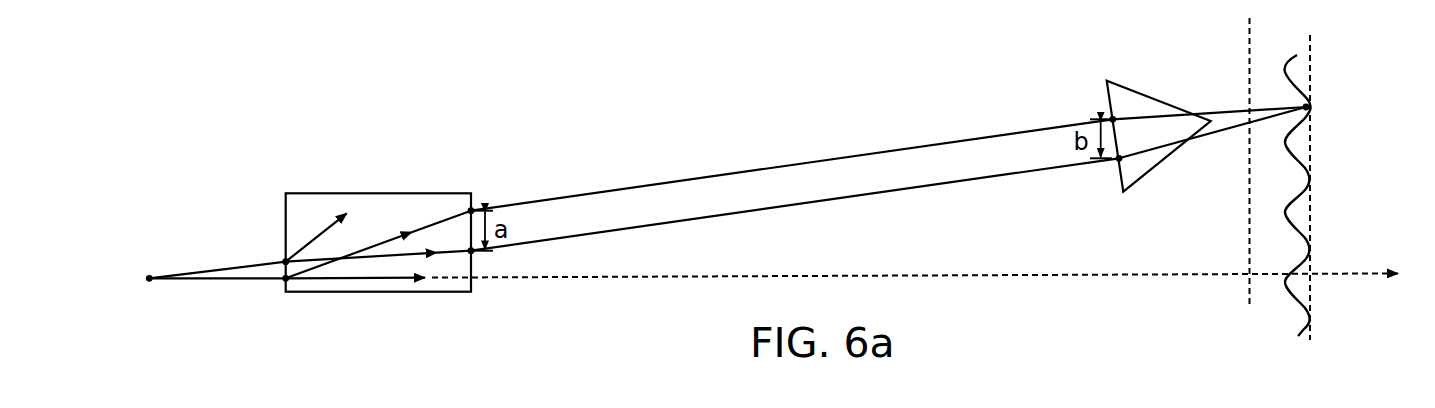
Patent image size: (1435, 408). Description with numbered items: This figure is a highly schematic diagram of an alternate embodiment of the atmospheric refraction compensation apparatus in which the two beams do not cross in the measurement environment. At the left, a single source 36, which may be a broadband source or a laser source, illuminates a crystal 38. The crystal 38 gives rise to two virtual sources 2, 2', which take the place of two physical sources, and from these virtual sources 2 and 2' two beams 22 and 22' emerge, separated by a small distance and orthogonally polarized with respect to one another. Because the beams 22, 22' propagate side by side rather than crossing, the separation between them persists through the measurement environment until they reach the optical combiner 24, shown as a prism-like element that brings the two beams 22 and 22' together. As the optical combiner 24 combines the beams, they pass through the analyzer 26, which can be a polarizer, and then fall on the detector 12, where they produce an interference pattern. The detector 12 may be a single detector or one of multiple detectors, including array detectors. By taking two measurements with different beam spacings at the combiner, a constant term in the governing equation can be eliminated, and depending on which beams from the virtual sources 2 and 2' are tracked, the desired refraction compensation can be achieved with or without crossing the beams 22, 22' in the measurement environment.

The source 36 is at (146, 276).
The crystal 38 is at (340, 193).
The virtual source 2 is at (490, 194).
The virtual source 2' is at (494, 262).
The beam 22 is at (792, 164).
The beam 22' is at (795, 217).
The optical combiner 24 is at (1125, 83).
The analyzer 26 is at (1249, 246).
The detector 12 is at (1312, 295).